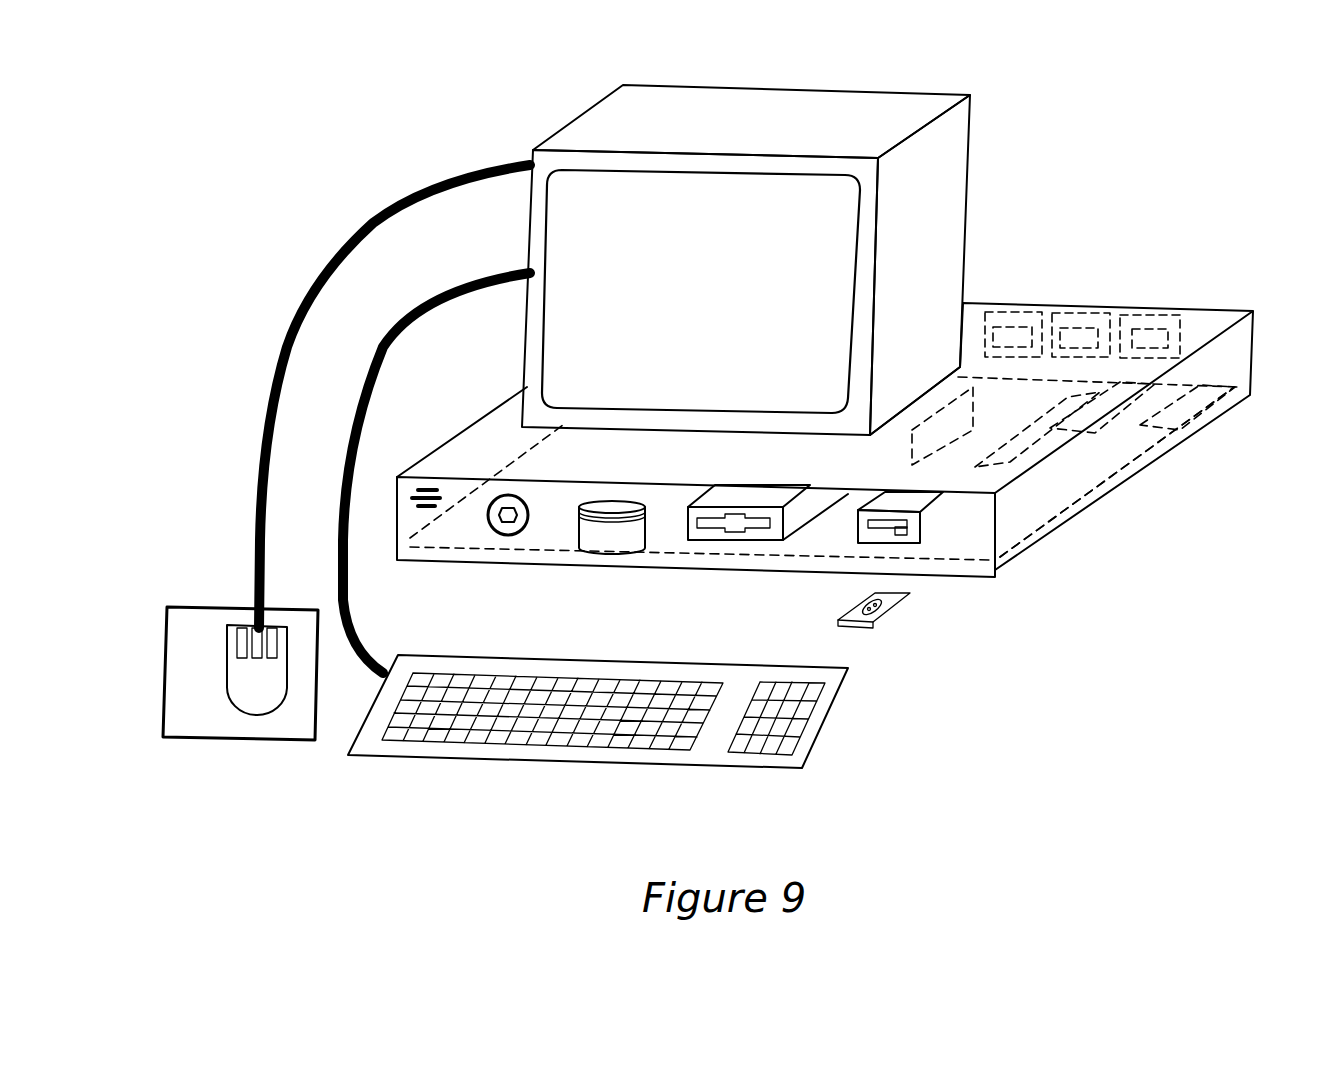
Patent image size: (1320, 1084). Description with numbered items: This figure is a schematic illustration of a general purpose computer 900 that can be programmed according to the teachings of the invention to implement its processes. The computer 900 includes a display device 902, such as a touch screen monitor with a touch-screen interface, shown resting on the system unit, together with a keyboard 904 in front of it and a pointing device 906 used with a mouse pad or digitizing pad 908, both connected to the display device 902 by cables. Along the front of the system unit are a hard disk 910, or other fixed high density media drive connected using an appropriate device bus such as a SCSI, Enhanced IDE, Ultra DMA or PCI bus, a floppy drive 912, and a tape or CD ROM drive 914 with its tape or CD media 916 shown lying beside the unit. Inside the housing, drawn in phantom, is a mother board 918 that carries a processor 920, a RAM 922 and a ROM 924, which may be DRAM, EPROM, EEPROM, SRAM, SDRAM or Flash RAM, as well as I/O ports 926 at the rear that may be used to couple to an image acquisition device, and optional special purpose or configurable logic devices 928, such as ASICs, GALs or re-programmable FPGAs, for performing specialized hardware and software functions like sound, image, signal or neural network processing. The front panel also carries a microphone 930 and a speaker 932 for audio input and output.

The general purpose computer 900 is at (1138, 759).
The display device 902 is at (967, 193).
The keyboard 904 is at (823, 727).
The pointing device 906 is at (255, 715).
The mouse pad or digitizing pad 908 is at (208, 607).
The hard disk 910 is at (603, 548).
The floppy drive 912 is at (718, 540).
The tape or CD ROM drive 914 is at (925, 518).
The tape or CD media 916 is at (882, 617).
The mother board 918 is at (1218, 405).
The processor 920 is at (998, 467).
The RAM 922 is at (1060, 418).
The ROM 924 is at (1147, 423).
The I/O ports 926 is at (1070, 310).
The special purpose logic devices or configurable logic devices 928 is at (910, 440).
The microphone 930 is at (421, 512).
The speaker 932 is at (508, 536).